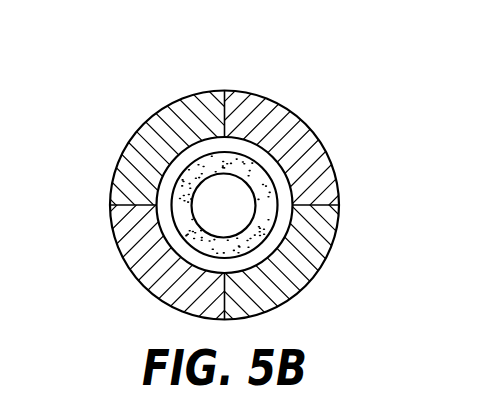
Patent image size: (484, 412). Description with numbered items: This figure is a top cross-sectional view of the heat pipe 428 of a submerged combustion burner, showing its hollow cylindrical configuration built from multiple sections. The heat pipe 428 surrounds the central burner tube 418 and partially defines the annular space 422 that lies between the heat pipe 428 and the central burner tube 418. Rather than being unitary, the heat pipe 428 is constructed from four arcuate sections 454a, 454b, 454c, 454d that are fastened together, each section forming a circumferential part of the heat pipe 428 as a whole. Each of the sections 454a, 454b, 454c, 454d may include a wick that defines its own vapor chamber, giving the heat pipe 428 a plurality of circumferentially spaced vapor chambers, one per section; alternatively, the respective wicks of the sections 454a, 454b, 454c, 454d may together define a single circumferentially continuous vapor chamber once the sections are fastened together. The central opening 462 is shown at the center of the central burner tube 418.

The heat pipe 428 is at (200, 103).
The arcuate section 454a is at (175, 127).
The arcuate section 454b is at (148, 250).
The arcuate section 454c is at (273, 125).
The arcuate section 454d is at (298, 250).
The annular space 422 is at (182, 254).
The central burner tube 418 is at (262, 185).
The lumen 462 is at (203, 179).